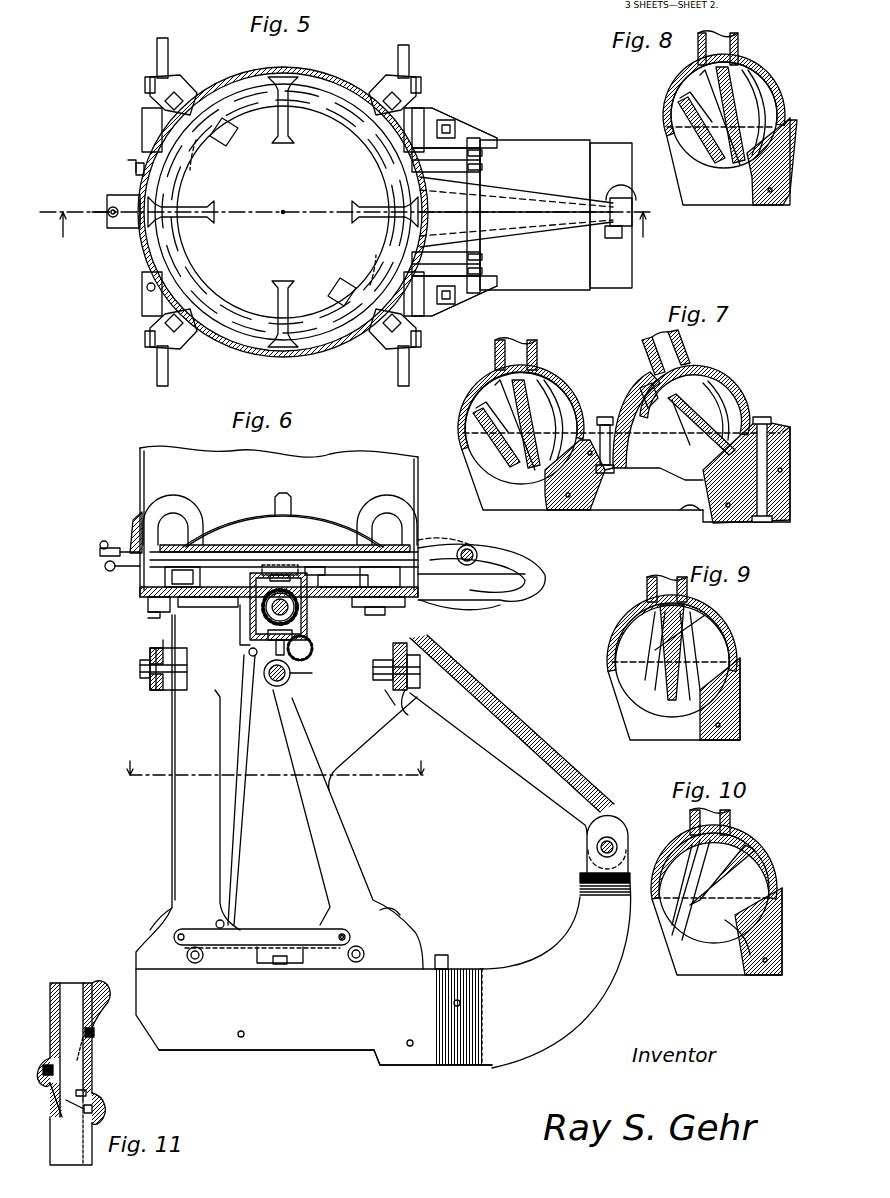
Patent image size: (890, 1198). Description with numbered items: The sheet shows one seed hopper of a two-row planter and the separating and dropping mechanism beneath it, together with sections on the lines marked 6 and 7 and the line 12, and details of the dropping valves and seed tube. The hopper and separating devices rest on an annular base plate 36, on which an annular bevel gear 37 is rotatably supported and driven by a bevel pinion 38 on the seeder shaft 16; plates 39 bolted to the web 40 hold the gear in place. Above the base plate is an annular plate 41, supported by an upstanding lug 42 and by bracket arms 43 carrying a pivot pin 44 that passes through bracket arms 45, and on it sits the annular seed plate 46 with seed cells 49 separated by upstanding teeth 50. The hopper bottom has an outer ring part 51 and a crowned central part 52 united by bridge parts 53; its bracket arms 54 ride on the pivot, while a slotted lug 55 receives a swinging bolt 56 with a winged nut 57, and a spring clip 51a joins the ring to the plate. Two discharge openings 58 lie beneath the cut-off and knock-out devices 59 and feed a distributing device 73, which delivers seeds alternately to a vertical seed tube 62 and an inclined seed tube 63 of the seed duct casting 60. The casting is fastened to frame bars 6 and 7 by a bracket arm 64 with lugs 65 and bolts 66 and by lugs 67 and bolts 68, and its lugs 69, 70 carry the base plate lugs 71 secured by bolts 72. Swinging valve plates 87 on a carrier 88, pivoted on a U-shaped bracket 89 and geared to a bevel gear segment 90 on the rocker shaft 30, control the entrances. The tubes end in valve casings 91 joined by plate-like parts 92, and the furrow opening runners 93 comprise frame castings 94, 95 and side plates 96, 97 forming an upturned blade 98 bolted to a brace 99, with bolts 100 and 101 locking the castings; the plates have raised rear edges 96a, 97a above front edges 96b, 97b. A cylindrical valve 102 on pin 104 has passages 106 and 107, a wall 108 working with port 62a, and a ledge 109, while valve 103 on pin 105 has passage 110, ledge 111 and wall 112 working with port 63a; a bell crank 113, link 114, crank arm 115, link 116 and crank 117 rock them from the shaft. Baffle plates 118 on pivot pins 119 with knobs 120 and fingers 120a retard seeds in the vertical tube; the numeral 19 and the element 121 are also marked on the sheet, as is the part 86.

In FIG. 5, the front frame bar 6 is at (405, 52).
In FIG. 6, the front frame bar 6 is at (408, 720).
In FIG. 5, the rear frame bar 7 is at (162, 45).
In FIG. 6, the rear frame bar 7 is at (150, 690).
In FIG. 6, the section line 12- 12 is at (277, 760).
In FIG. 6, the seeder shaft 16 is at (302, 624).
In FIG. 5, the latch tip 19 is at (136, 168).
In FIG. 6, the rocker shaft 30 is at (286, 684).
In FIG. 6, the annular base plate 36 is at (150, 592).
In FIG. 6, the annular bevel gear 37 is at (350, 580).
In FIG. 6, the bevel pinion 38 is at (302, 606).
In FIG. 6, the plates 39 is at (285, 575).
In FIG. 6, the web 40 is at (270, 565).
In FIG. 6, the annular plate 41 is at (320, 567).
In FIG. 6, the upstanding lug 42 is at (165, 577).
In FIG. 5, the bracket arms 43 is at (483, 160).
In FIG. 6, the bracket arms 43 is at (470, 610).
In FIG. 5, the pivot pin 44 is at (478, 228).
In FIG. 6, the pivot pin 44 is at (480, 568).
In FIG. 5, the bracket arms 45 is at (455, 140).
In FIG. 6, the bracket arms 45 is at (470, 588).
In FIG. 6, the annular seed plate 46 is at (230, 552).
In FIG. 5, the seed cells 49 is at (262, 250).
In FIG. 5, the upstanding teeth 50 is at (278, 272).
In FIG. 6, the outer ring part 51 is at (463, 545).
In FIG. 5, the spring clip 51a is at (130, 160).
In FIG. 5, the crowned central part 52 is at (288, 201).
In FIG. 6, the crowned central part 52 is at (318, 512).
In FIG. 5, the yoke or bridge parts 53 is at (296, 128).
In FIG. 6, the yoke or bridge parts 53 is at (200, 500).
In FIG. 5, the bracket arms 54 is at (485, 168).
In FIG. 6, the bracket arms 54 is at (472, 545).
In FIG. 6, the lug or bracket 55 is at (132, 530).
In FIG. 6, the swinging bolt 56 is at (105, 568).
In FIG. 5, the winged nut 57 is at (113, 226).
In FIG. 6, the winged nut 57 is at (100, 550).
In FIG. 5, the discharge openings 58 is at (200, 160).
In FIG. 5, the cut-off and knock-out devices 59 is at (233, 138).
In FIG. 6, the seed duct casting 60 is at (172, 831).
In FIG. 6, the vertical seed tube 62 is at (172, 801).
In FIG. 11, the vertical seed tube 62 is at (50, 1020).
In FIG. 8, the port 62a is at (738, 44).
In FIG. 7, the port 62a is at (537, 358).
In FIG. 9, the port 62a is at (647, 590).
In FIG. 10, the port 62a is at (690, 825).
In FIG. 6, the inclined seed tube 63 is at (335, 830).
In FIG. 7, the port 63a is at (690, 355).
In FIG. 6, the bracket arm 64 is at (348, 745).
In FIG. 6, the lugs 65 is at (385, 698).
In FIG. 6, the bolts 66 is at (373, 670).
In FIG. 6, the lugs 67 is at (190, 670).
In FIG. 6, the bolts 68 is at (140, 670).
In FIG. 6, the lugs 69 is at (385, 615).
In FIG. 6, the lugs 70 is at (152, 612).
In FIG. 5, the lugs 71 is at (190, 95).
In FIG. 5, the bolts 72 is at (165, 101).
In FIG. 6, the distributing device 73 is at (148, 605).
In FIG. 6, the bracket 86 is at (240, 635).
In FIG. 6, the swinging valve plates 87 is at (205, 607).
In FIG. 6, the carrier 88 is at (307, 660).
In FIG. 6, the U-shaped bracket 89 is at (295, 640).
In FIG. 6, the bevel gear segment 90 is at (300, 690).
In FIG. 6, the valve casings 91 is at (150, 925).
In FIG. 7, the valve casings 91 is at (460, 422).
In FIG. 6, the flat plate-like parts 92 is at (290, 969).
In FIG. 5, the furrow opening runners 93 is at (480, 130).
In FIG. 7, the frame casting 94 is at (768, 524).
In FIG. 8, the frame casting 95 is at (780, 205).
In FIG. 7, the frame casting 95 is at (590, 510).
In FIG. 9, the frame casting 95 is at (740, 702).
In FIG. 10, the frame casting 95 is at (760, 975).
In FIG. 8, the side plate 96 is at (740, 205).
In FIG. 7, the side plate 96 is at (640, 510).
In FIG. 9, the side plate 96 is at (680, 740).
In FIG. 10, the side plate 96 is at (690, 975).
In FIG. 7, the horizontal bottom edge 96a is at (690, 512).
In FIG. 7, the horizontal bottom edge 96b is at (710, 522).
In FIG. 6, the side plate 97 is at (372, 1053).
In FIG. 6, the horizontal bottom edge 97a is at (225, 1052).
In FIG. 6, the horizontal bottom edge 97b is at (434, 1066).
In FIG. 5, the upturned blade 98 is at (560, 142).
In FIG. 6, the upturned blade 98 is at (545, 935).
In FIG. 5, the brace 99 is at (570, 203).
In FIG. 6, the brace 99 is at (548, 812).
In FIG. 7, the bolt 100 is at (762, 417).
In FIG. 7, the bolt 101 is at (605, 417).
In FIG. 8, the oscillating cylindrical valve 102 is at (760, 75).
In FIG. 7, the oscillating cylindrical valve 102 is at (505, 450).
In FIG. 9, the oscillating cylindrical valve 102 is at (700, 625).
In FIG. 10, the oscillating cylindrical valve 102 is at (690, 925).
In FIG. 7, the valve 103 is at (705, 430).
In FIG. 6, the pin 104 is at (195, 963).
In FIG. 8, the pin 104 is at (702, 130).
In FIG. 7, the pin 104 is at (500, 430).
In FIG. 9, the pin 104 is at (652, 670).
In FIG. 6, the pin 105 is at (360, 962).
In FIG. 7, the pin 105 is at (680, 425).
In FIG. 8, the seed passage 106 is at (760, 90).
In FIG. 7, the seed passage 106 is at (548, 385).
In FIG. 9, the seed passage 106 is at (672, 700).
In FIG. 10, the seed passage 106 is at (705, 920).
In FIG. 8, the seed passage 107 is at (712, 160).
In FIG. 7, the seed passage 107 is at (508, 468).
In FIG. 9, the seed passage 107 is at (650, 670).
In FIG. 10, the seed passage 107 is at (675, 925).
In FIG. 8, the cylindrical wall 108 is at (690, 62).
In FIG. 7, the cylindrical wall 108 is at (475, 382).
In FIG. 9, the cylindrical wall 108 is at (705, 600).
In FIG. 10, the cylindrical wall 108 is at (748, 838).
In FIG. 8, the seat or ledge 109 is at (738, 165).
In FIG. 7, the seat or ledge 109 is at (530, 470).
In FIG. 10, the seat or ledge 109 is at (735, 950).
In FIG. 7, the seed passage 110 is at (712, 395).
In FIG. 7, the seat or ledge 111 is at (705, 475).
In FIG. 7, the cylindrical wall 112 is at (650, 405).
In FIG. 6, the bell crank 113 is at (222, 930).
In FIG. 6, the link 114 is at (240, 838).
In FIG. 6, the crank arm 115 is at (248, 655).
In FIG. 6, the link 116 is at (270, 929).
In FIG. 6, the crank 117 is at (347, 937).
In FIG. 11, the deflector or baffle plates 118 is at (92, 1052).
In FIG. 11, the pivot pin 119 is at (43, 1070).
In FIG. 11, the knob 120 is at (84, 1115).
In FIG. 11, the finger 120a is at (70, 1106).
In FIG. 11, the bolt 121 is at (88, 1095).